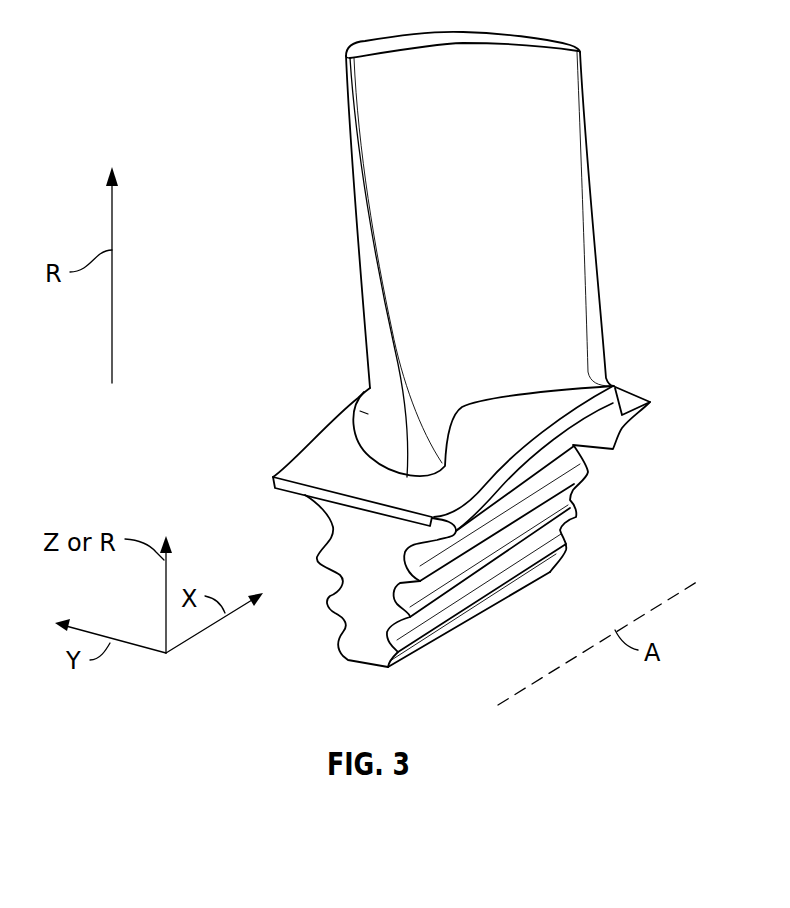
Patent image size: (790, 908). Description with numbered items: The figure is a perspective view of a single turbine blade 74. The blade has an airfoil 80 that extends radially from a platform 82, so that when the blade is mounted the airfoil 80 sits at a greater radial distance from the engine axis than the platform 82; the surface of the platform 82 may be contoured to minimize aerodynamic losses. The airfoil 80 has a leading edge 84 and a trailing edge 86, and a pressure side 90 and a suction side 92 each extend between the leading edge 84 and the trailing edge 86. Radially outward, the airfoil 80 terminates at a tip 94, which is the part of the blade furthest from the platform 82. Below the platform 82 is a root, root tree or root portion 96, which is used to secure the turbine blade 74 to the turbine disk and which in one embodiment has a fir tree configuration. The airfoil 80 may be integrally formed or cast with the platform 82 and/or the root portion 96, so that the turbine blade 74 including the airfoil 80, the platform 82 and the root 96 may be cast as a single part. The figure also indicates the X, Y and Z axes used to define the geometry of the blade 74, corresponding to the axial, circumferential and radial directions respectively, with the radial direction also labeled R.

The turbine blade 74 is at (292, 178).
The airfoil 80 is at (563, 75).
The platform 82 is at (505, 450).
The leading edge 84 is at (380, 297).
The trailing edge 86 is at (588, 193).
The pressure side 90 is at (380, 107).
The suction side 92 is at (482, 32).
The tip 94 is at (390, 43).
The root portion 96 is at (502, 592).